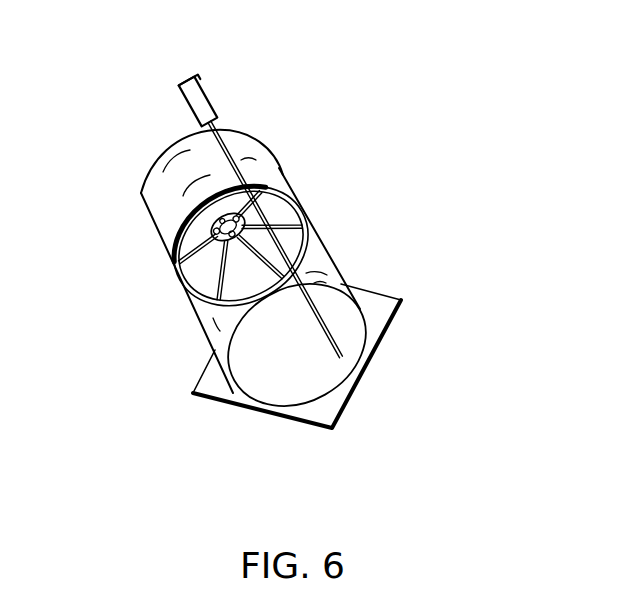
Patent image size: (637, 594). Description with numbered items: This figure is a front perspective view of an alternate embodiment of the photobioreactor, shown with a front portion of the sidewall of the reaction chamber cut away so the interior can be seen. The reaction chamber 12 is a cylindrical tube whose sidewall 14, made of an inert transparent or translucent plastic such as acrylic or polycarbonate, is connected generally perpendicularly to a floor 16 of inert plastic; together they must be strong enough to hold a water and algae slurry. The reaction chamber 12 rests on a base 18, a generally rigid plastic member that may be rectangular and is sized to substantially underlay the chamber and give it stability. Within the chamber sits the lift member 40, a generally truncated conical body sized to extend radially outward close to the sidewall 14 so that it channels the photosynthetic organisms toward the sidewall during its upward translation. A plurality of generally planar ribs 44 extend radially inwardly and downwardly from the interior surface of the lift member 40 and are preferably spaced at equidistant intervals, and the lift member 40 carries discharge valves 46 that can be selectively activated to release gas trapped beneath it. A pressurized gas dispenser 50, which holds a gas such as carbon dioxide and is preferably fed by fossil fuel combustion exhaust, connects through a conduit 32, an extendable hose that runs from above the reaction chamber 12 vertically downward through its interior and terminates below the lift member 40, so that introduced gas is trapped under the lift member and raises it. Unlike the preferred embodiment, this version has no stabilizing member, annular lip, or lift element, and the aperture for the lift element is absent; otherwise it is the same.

The reaction chamber 12 is at (320, 263).
The sidewall 14 is at (317, 235).
The floor 16 is at (286, 364).
The base 18 is at (373, 312).
The conduit 32 is at (232, 131).
The lift member 40 is at (165, 142).
The ribs 44 is at (280, 197).
The discharge valves 46 is at (215, 248).
The pressurized gas dispenser 50 is at (198, 103).